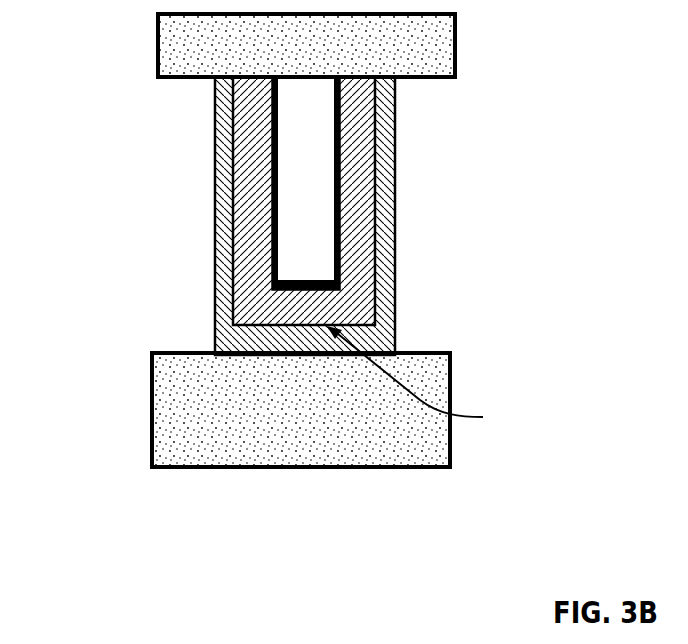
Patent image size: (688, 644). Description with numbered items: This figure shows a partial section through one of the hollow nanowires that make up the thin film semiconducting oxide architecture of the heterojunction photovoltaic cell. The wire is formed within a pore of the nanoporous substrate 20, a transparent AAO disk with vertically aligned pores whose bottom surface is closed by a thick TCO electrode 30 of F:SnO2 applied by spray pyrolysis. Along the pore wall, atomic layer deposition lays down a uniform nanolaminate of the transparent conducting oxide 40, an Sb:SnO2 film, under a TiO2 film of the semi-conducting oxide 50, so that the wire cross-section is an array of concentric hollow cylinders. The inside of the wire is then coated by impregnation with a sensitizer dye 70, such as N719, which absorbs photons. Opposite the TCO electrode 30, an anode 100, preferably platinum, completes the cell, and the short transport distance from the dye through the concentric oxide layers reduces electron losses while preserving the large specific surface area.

The TCO electrode 30 is at (183, 42).
The nanoporous substrate 20 is at (297, 93).
The transparent conducting oxide 40 is at (272, 157).
The semi-conducting oxide 50 is at (250, 223).
The sensitizer dye 70 is at (424, 380).
The anode 100 is at (177, 410).